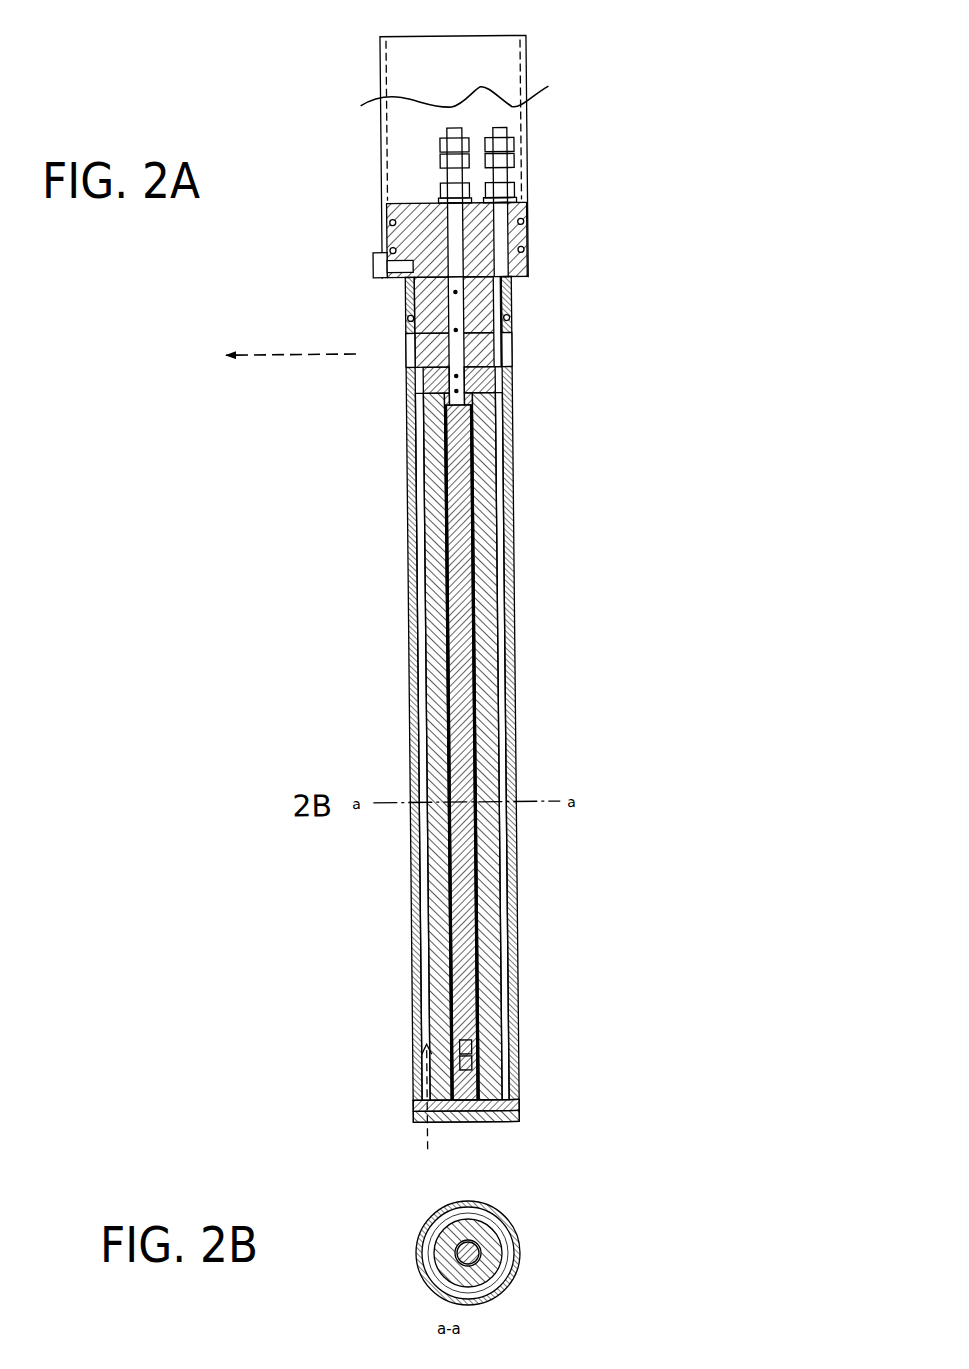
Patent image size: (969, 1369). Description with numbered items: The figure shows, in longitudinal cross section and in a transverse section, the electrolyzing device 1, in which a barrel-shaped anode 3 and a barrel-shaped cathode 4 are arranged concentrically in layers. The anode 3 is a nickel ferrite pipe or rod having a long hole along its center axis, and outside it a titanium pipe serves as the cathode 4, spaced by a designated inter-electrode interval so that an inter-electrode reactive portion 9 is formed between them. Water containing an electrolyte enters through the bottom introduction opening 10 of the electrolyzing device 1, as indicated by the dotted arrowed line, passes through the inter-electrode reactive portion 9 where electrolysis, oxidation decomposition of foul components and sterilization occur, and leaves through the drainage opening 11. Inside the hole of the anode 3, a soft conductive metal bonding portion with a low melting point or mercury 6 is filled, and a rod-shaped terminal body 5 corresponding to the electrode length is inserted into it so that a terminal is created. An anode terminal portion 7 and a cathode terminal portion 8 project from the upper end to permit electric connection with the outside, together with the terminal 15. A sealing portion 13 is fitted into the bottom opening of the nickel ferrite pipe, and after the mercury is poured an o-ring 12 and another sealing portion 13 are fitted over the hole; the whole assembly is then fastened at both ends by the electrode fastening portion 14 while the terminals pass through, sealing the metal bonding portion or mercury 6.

In FIG. 2A, the electrolyzing device 1 is at (556, 306).
In FIG. 2A, the anode 3 is at (433, 642).
In FIG. 2B, the anode 3 is at (441, 1238).
In FIG. 2A, the cathode 4 is at (409, 521).
In FIG. 2B, the cathode 4 is at (421, 1276).
In FIG. 2A, the terminal body 5 is at (470, 585).
In FIG. 2A, the metal bonding portion with a low melting point or mercury 6 is at (451, 767).
In FIG. 2B, the metal bonding portion with a low melting point or mercury 6 is at (480, 1243).
In FIG. 2A, the anode terminal portion 7 is at (456, 128).
In FIG. 2A, the cathode terminal portion 8 is at (507, 128).
In FIG. 2A, the inter-electrode reactive portion 9 is at (428, 923).
In FIG. 2B, the inter-electrode reactive portion 9 is at (500, 1270).
In FIG. 2A, the bottom introduction opening 10 is at (416, 1122).
In FIG. 2A, the drainage opening 11 is at (424, 352).
In FIG. 2A, the o-ring 12 is at (470, 379).
In FIG. 2A, the sealing portion 13 is at (407, 312).
In FIG. 2A, the electrode fastening portion 14 is at (393, 250).
In FIG. 2A, the terminal 15 is at (525, 74).